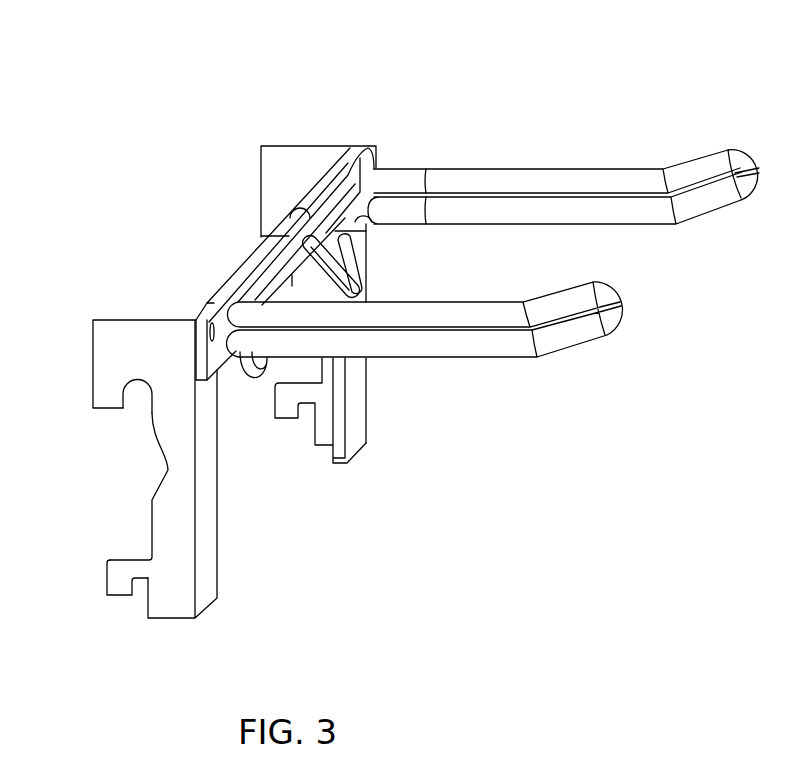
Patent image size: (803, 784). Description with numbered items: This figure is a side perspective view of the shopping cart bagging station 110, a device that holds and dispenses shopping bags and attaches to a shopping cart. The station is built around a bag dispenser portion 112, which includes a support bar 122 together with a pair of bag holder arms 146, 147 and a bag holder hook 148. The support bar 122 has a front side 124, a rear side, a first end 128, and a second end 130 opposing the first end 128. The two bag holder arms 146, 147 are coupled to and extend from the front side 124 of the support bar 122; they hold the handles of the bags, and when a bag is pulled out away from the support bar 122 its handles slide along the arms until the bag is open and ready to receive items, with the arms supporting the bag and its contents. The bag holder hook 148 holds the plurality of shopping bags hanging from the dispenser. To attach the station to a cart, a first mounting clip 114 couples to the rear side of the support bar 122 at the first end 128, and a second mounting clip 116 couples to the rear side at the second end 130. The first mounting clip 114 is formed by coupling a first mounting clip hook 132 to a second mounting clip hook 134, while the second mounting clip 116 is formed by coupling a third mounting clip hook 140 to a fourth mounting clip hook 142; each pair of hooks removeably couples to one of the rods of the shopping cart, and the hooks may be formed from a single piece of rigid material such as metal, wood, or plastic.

The shopping cart bagging station 110 is at (438, 126).
The bag dispenser portion 112 is at (582, 145).
The first mounting clip 114 is at (162, 503).
The second mounting clip 116 is at (293, 157).
The support bar 122 is at (226, 378).
The front side 124 is at (264, 276).
The first end 128 is at (178, 286).
The second end 130 is at (372, 138).
The first mounting clip hook 132 is at (103, 398).
The second mounting clip hook 134 is at (118, 577).
The third mounting clip hook 140 is at (277, 220).
The fourth mounting clip hook 142 is at (287, 410).
The bag holder arm 146 is at (467, 347).
The bag holder arm 147 is at (643, 182).
The bag holder hook 148 is at (332, 275).